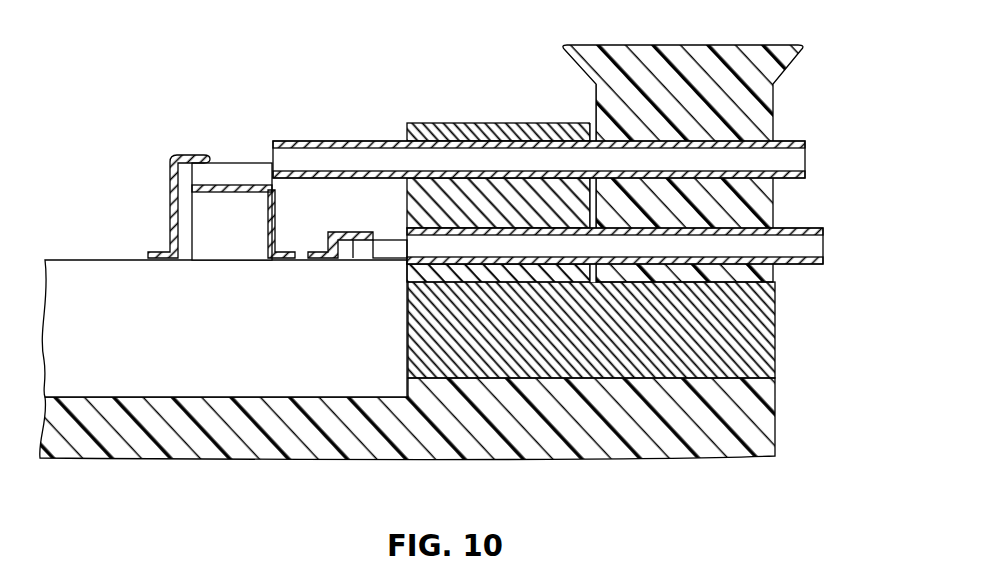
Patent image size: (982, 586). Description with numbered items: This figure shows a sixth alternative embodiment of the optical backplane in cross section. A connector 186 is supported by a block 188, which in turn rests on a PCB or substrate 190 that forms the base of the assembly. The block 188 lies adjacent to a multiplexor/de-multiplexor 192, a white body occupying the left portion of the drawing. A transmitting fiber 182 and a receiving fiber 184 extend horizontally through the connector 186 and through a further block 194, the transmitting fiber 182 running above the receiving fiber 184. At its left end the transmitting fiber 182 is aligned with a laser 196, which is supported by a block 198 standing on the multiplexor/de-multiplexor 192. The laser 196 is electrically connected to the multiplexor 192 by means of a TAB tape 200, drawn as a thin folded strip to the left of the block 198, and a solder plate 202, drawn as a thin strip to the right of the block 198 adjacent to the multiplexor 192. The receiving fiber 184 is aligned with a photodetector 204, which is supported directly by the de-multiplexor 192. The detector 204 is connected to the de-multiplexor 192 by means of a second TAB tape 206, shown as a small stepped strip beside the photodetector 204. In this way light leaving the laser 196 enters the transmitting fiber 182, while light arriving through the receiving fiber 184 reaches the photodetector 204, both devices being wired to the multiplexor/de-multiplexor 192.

The transmitting fiber 182 is at (806, 156).
The receiving fiber 184 is at (824, 246).
The connector 186 is at (742, 46).
The block 188 is at (748, 314).
The PCB or substrate 190 is at (748, 412).
The multiplexor/de-multiplexor 192 is at (258, 346).
The block 194 is at (482, 124).
The laser 196 is at (240, 185).
The block 198 is at (250, 239).
The TAB tape 200 is at (170, 190).
The solder plate 202 is at (268, 255).
The photodetector 204 is at (388, 250).
The TAB tape 206 is at (328, 233).